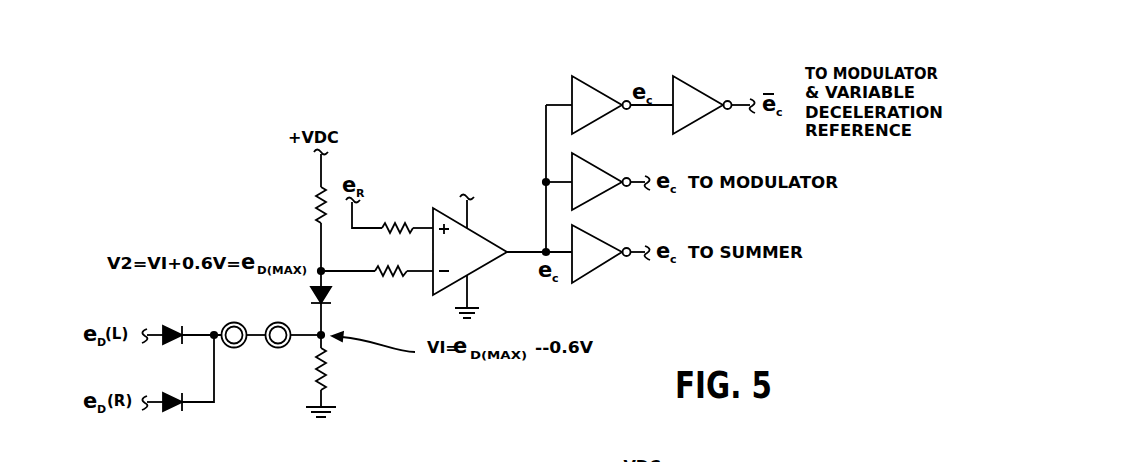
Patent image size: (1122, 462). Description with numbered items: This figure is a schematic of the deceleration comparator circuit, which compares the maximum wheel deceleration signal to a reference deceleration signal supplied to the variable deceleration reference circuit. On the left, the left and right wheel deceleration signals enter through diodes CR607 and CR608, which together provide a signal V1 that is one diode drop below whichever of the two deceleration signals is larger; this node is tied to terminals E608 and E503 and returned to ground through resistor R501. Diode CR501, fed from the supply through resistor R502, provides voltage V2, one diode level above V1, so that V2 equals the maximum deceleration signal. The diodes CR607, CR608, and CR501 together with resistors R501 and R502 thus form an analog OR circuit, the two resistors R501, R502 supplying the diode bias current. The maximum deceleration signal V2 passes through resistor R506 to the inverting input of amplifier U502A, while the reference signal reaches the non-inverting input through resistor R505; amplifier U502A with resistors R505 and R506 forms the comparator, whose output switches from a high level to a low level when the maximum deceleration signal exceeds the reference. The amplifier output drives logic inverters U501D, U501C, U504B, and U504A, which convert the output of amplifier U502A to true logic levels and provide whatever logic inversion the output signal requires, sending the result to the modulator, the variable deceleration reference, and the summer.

The resistor R501 is at (342, 369).
The resistor R502 is at (294, 205).
The resistor R505 is at (394, 217).
The resistor R506 is at (388, 282).
The diode CR501 is at (349, 305).
The diode CR607 is at (165, 348).
The diode CR608 is at (177, 416).
The terminal E608 is at (228, 326).
The terminal E503 is at (286, 326).
The amplifier U502A is at (466, 245).
The logic inverter U501D is at (601, 95).
The logic inverter U501C is at (702, 95).
The logic inverter U504B is at (603, 176).
The logic inverter U504A is at (603, 248).